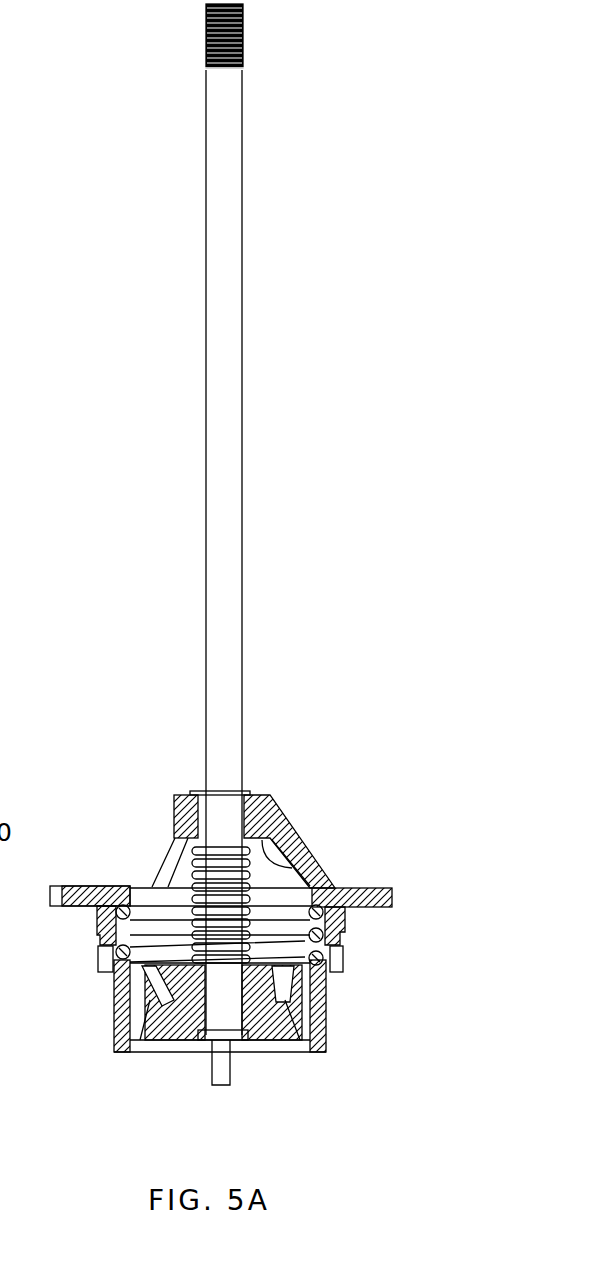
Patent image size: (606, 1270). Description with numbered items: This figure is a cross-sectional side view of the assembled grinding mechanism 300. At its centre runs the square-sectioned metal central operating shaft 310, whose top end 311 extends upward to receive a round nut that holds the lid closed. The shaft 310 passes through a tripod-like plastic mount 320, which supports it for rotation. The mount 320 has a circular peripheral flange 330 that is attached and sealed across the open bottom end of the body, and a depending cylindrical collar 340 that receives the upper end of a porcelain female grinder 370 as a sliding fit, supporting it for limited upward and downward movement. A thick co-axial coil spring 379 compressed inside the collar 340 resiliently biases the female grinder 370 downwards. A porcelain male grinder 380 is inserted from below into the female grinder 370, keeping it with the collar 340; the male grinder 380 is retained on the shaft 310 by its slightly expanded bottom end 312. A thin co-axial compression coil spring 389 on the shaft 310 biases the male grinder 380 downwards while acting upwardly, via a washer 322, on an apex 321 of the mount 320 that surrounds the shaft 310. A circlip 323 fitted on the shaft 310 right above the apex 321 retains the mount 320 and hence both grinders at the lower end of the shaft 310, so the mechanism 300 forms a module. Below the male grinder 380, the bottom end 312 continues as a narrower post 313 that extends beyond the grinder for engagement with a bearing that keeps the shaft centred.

The grinding mechanism 300 is at (78, 1145).
The central operating shaft 310 is at (227, 468).
The top end 311 is at (244, 38).
The bottom end 312 is at (200, 1052).
The post 313 is at (232, 1078).
The mount 320 is at (300, 832).
The apex 321 is at (182, 792).
The washer 322 is at (318, 858).
The circlip 323 is at (252, 792).
The peripheral flange 330 is at (392, 896).
The collar 340 is at (345, 920).
The female grinder 370 is at (133, 996).
The coil spring 379 is at (100, 915).
The male grinder 380 is at (318, 996).
The compression coil spring 389 is at (196, 862).